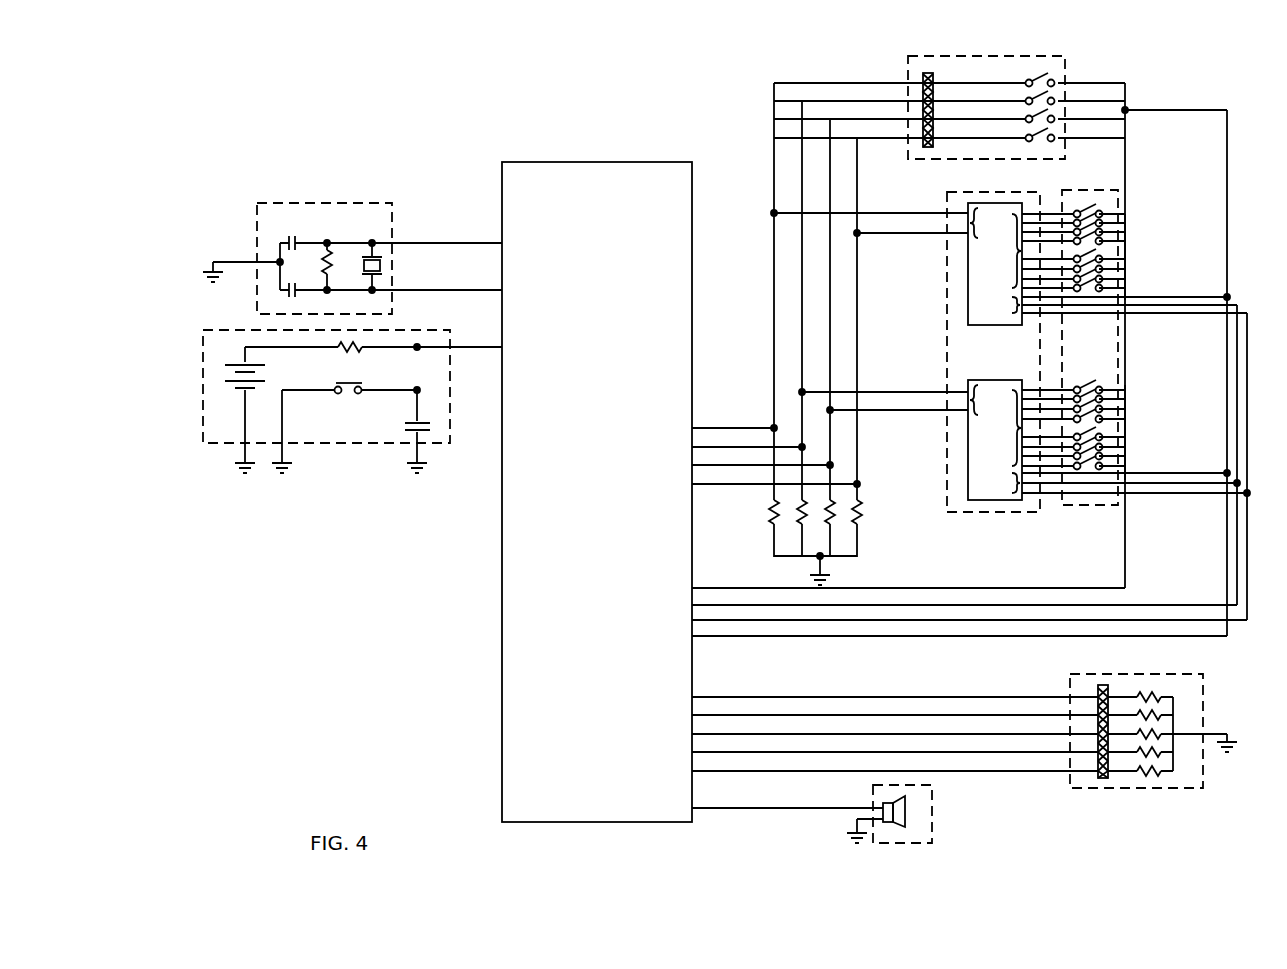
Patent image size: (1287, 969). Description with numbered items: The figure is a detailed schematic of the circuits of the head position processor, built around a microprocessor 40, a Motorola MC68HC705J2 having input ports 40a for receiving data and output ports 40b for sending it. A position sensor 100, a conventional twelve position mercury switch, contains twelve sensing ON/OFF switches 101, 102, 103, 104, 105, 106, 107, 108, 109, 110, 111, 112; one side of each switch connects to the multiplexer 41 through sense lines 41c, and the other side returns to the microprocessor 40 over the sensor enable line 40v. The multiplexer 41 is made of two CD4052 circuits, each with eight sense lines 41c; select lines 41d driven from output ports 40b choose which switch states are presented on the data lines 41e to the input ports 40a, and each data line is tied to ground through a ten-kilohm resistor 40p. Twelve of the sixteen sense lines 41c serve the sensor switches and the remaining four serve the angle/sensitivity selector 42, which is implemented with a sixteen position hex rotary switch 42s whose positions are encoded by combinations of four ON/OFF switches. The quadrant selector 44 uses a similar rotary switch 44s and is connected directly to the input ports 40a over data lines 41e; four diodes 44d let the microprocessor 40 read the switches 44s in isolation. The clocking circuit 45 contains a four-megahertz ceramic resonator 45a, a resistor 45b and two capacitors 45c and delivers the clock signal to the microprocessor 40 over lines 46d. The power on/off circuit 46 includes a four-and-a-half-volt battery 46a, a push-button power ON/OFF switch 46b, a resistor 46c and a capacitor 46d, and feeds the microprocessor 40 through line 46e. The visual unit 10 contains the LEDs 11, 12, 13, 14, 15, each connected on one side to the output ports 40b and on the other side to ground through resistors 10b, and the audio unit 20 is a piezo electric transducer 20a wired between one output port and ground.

The visual unit 10 is at (1203, 675).
The resistors 10b is at (1152, 775).
The LED 11 is at (1104, 780).
The LED 12 is at (1103, 715).
The LED 13 is at (1103, 733).
The LED 14 is at (1103, 752).
The LED 15 is at (1103, 769).
The audio unit 20 is at (905, 843).
The piezo electric transducer 20a is at (912, 812).
The microprocessor 40 is at (597, 476).
The input ports 40a is at (686, 424).
The output ports 40b is at (684, 600).
The resistor 40p is at (884, 514).
The sensor enable line 40v is at (692, 588).
The multiplexer (MUX) 41 is at (1035, 512).
The sense lines 41c is at (1048, 340).
The select lines 41d is at (1109, 394).
The data lines 41e is at (982, 398).
The angle/sensitivity selector (ASSEL) 42 is at (1118, 196).
The rotary switch 42s is at (1078, 205).
The quadrant selector (QSEL) 44 is at (946, 56).
The diodes 44d is at (922, 74).
The rotary switch 44s is at (1050, 72).
The clocking circuit 45 is at (283, 203).
The ceramic resonator 45a is at (406, 266).
The resistor 45b is at (330, 252).
The capacitors 45c is at (283, 258).
The power on/off circuit 46 is at (203, 372).
The battery 46a is at (240, 392).
The push-button power ON/OFF switch 46b is at (348, 384).
The resistor 46c is at (360, 351).
The capacitor 46d is at (432, 425).
The line 46e is at (503, 347).
The position sensor 100 is at (1125, 350).
The sensing ON/OFF switch 101 is at (1132, 240).
The sensing ON/OFF switch 102 is at (1130, 258).
The sensing ON/OFF switch 103 is at (1125, 280).
The sensing ON/OFF switch 104 is at (1130, 286).
The sensing ON/OFF switch 105 is at (1125, 390).
The sensing ON/OFF switch 106 is at (1130, 392).
The sensing ON/OFF switch 107 is at (1125, 410).
The sensing ON/OFF switch 108 is at (1130, 412).
The sensing ON/OFF switch 109 is at (1125, 432).
The sensing ON/OFF switch 110 is at (1130, 437).
The sensing ON/OFF switch 111 is at (1125, 455).
The sensing ON/OFF switch 112 is at (1130, 461).